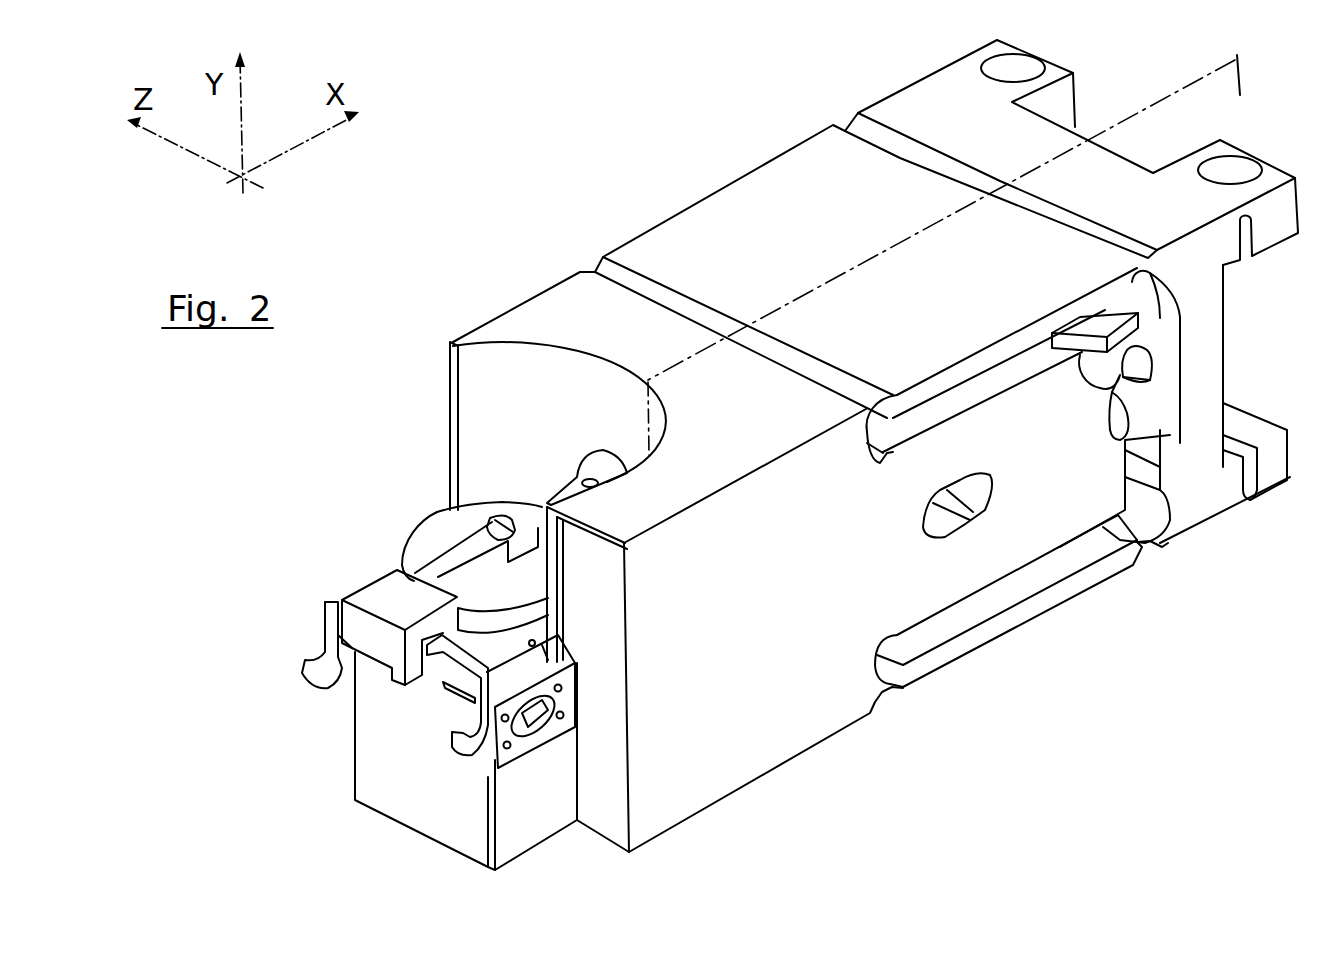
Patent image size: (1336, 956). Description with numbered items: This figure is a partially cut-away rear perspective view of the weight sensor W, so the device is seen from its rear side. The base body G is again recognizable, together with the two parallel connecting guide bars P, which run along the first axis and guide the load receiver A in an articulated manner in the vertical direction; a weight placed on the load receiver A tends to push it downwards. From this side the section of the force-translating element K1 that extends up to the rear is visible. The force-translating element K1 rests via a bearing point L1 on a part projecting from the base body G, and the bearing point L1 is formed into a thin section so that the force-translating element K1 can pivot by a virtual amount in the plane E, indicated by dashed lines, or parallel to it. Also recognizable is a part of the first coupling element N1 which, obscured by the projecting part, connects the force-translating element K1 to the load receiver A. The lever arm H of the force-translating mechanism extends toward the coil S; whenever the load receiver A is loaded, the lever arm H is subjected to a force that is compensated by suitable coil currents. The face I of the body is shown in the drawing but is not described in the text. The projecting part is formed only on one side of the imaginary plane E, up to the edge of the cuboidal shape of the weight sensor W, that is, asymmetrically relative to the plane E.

The load receiver A is at (1043, 168).
The plane E is at (1213, 90).
The parallel guide bar P is at (753, 250).
The force-translating element K1 is at (1097, 322).
The first coupling element N1 is at (1170, 398).
The base body G is at (735, 432).
The lever arm H is at (575, 477).
The side face I is at (1045, 484).
The coil S is at (420, 548).
The bearing point L1 is at (1170, 435).
The weight sensor W is at (1077, 658).